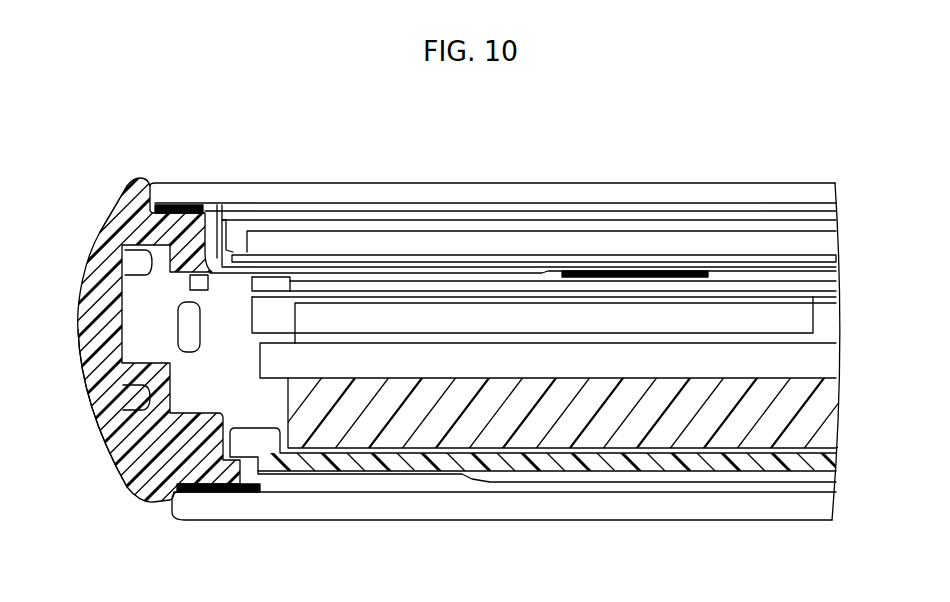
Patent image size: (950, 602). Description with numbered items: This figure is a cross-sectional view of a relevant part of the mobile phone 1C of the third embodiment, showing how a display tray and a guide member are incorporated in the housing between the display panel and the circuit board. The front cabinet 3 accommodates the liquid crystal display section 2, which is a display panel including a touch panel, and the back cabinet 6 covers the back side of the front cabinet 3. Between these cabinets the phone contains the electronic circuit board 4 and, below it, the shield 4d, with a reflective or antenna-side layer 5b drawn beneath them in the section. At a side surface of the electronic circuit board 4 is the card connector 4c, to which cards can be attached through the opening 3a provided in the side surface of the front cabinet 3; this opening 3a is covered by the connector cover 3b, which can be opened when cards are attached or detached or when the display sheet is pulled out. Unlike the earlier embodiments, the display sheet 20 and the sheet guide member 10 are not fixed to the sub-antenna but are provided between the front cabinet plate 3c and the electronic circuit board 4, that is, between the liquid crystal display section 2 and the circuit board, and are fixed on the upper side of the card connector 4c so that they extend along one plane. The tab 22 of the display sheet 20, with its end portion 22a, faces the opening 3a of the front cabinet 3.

The mobile phone 1C is at (844, 142).
The liquid crystal display section 2 is at (780, 190).
The front cabinet 3 is at (142, 178).
The opening 3a is at (98, 240).
The connector cover 3b is at (80, 322).
The front cabinet plate 3c is at (842, 266).
The electronic circuit board 4 is at (830, 362).
The card connector 4c is at (800, 318).
The shield 4d is at (822, 412).
The reflective sheet 5b is at (650, 476).
The back cabinet 6 is at (767, 514).
The sheet guide member 10 is at (728, 270).
The display sheet 20 is at (331, 276).
The tab 22 is at (262, 265).
The polarizer end portion 22a is at (218, 262).